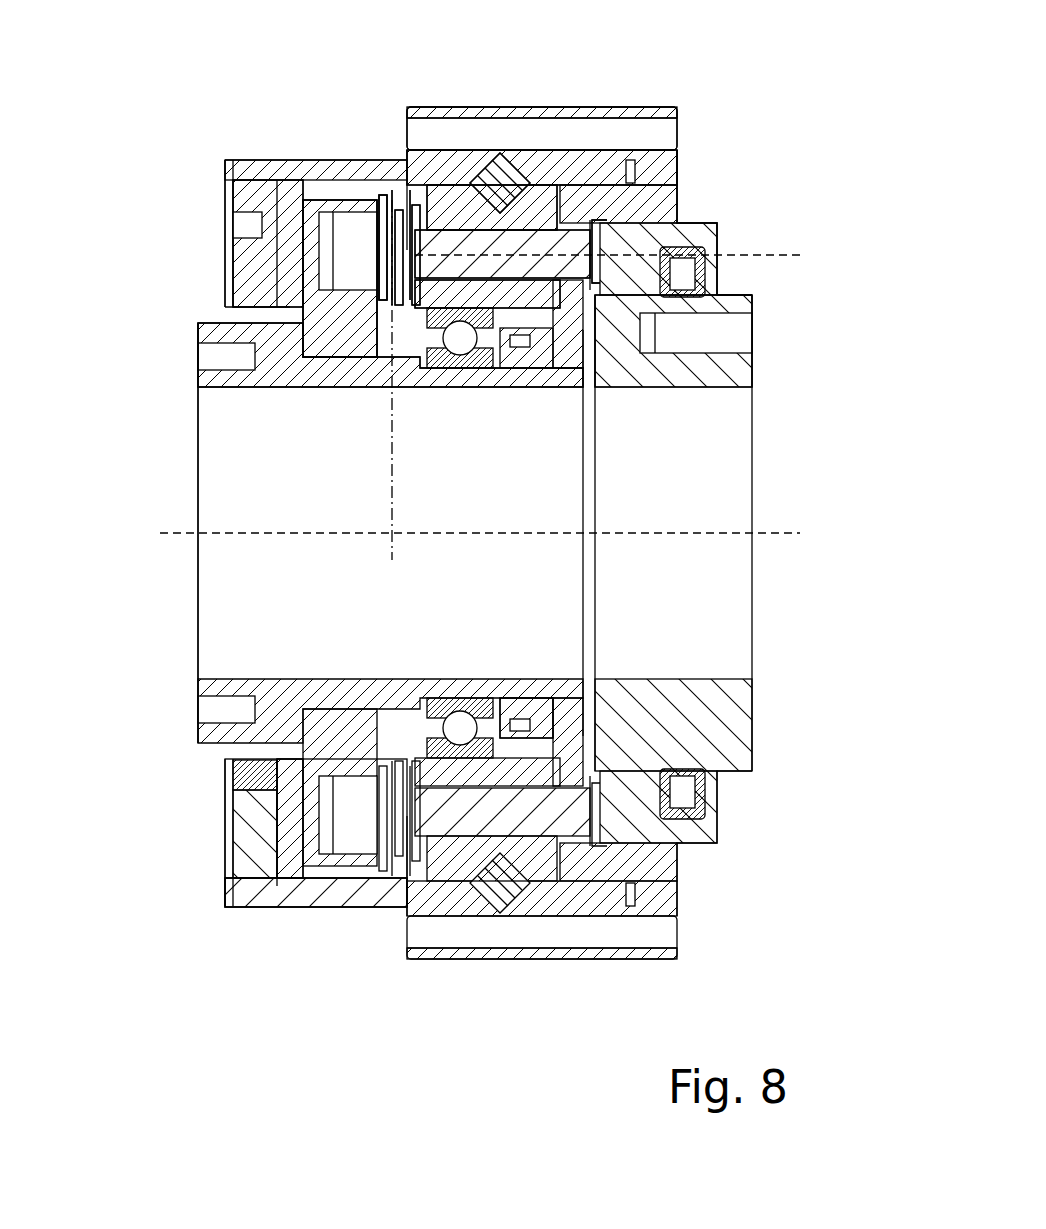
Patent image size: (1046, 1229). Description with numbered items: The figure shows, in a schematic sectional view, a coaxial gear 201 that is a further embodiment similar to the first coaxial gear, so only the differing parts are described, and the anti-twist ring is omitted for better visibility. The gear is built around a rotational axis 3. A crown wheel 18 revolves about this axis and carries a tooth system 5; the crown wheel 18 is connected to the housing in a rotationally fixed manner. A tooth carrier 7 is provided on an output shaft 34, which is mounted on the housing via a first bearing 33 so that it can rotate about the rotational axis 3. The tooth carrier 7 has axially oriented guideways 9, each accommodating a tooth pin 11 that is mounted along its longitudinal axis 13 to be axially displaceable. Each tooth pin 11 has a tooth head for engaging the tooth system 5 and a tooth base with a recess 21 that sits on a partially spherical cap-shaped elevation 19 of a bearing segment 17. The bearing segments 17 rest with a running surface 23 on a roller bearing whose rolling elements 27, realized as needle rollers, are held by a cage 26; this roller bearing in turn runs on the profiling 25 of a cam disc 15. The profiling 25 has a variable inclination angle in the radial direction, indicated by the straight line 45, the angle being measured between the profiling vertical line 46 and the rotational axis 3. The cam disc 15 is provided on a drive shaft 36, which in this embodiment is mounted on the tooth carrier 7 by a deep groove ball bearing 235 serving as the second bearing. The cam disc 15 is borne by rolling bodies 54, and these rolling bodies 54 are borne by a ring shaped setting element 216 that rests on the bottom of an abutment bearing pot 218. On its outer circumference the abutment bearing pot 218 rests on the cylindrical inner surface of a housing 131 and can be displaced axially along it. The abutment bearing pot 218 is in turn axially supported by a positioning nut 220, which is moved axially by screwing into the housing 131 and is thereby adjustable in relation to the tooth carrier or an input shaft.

The coaxial gear 201 is at (190, 186).
The rolling bodies 54 is at (316, 215).
The rolling elements 27 is at (392, 200).
The cage 26 is at (383, 200).
The cam disc 15 is at (338, 205).
The partially spherical cap-shaped elevation 19 is at (418, 235).
The first bearing 33 is at (497, 170).
The tooth pins 11 is at (528, 220).
The tooth carrier 7 is at (545, 206).
The housing 131 is at (628, 107).
The crown wheel 18 is at (677, 170).
The tooth system 5 is at (592, 243).
The profiling vertical line 46 is at (765, 258).
The profiling 25 is at (378, 240).
The running surface 23 is at (378, 290).
The drive shaft 36 is at (303, 387).
The bearing segment 17 is at (385, 330).
The recess 21 is at (410, 300).
The guideways 9 is at (520, 280).
The longitudinal axes 13 is at (497, 262).
The output shaft 34 is at (681, 387).
The rotational axis 3 is at (440, 546).
The straight line 45 is at (392, 540).
The deep groove ball bearing 235 is at (467, 700).
The abutment bearing pot 218 is at (290, 770).
The positioning nut 220 is at (235, 825).
The setting element 216 is at (310, 863).